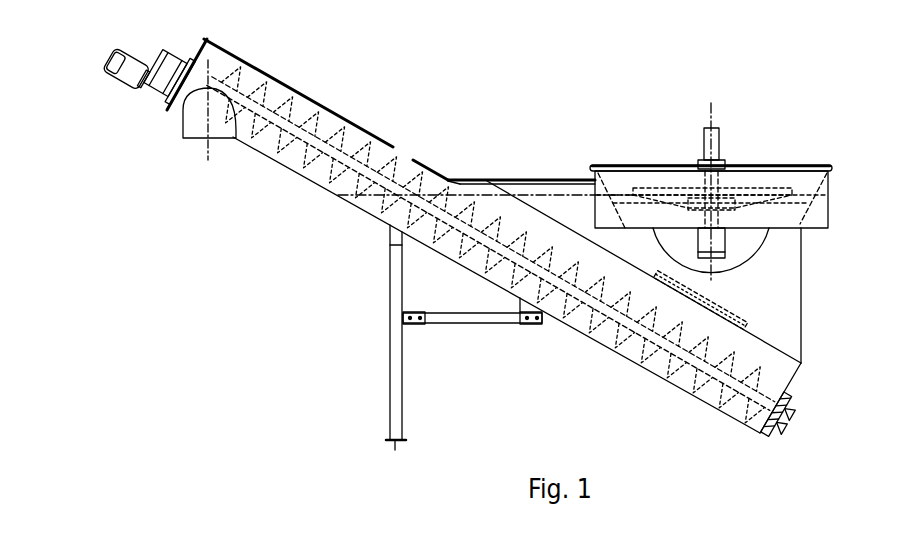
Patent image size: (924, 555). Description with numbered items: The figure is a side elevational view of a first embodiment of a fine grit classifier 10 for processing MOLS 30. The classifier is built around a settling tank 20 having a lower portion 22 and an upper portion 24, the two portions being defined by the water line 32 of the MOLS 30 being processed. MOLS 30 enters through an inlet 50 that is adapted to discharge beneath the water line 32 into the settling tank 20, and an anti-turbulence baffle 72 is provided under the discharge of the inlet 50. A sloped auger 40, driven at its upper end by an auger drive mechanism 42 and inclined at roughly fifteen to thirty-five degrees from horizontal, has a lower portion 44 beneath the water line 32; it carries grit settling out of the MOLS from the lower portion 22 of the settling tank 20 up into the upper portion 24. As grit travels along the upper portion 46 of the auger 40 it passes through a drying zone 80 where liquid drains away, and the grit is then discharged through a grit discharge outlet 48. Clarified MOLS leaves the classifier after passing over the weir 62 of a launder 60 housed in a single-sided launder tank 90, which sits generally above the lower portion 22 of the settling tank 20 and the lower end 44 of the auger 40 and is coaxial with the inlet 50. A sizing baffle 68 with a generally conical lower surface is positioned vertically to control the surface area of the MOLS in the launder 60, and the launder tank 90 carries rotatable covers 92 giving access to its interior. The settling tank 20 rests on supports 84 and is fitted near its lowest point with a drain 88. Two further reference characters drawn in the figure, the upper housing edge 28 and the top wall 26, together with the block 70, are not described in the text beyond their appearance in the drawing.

The fine grit classifier 10 is at (295, 258).
The settling tank 20 is at (773, 307).
The lower portion of the settling tank 22 is at (760, 360).
The upper portion of the settling tank 24 is at (357, 118).
The housing top wall 26 is at (480, 180).
The trough upper edge 28 is at (263, 82).
The MOLS 30 is at (787, 298).
The water line 32 is at (535, 180).
The sloped auger 40 is at (723, 373).
The auger drive mechanism 42 is at (163, 53).
The lower portion of the auger 44 is at (677, 358).
The upper portion of the auger 46 is at (456, 148).
The grit discharge outlet 48 is at (200, 130).
The MOLS inlet 50 is at (720, 135).
The launder 60 is at (810, 198).
The weir 62 is at (625, 227).
The sizing baffle 68 is at (672, 192).
The outlet valve 70 is at (708, 243).
The anti-turbulence baffle 72 is at (740, 313).
The drying zone 80 is at (337, 199).
The supports 84 is at (447, 325).
The drain 88 is at (737, 427).
The launder tank 90 is at (815, 180).
The covers 92 is at (683, 163).